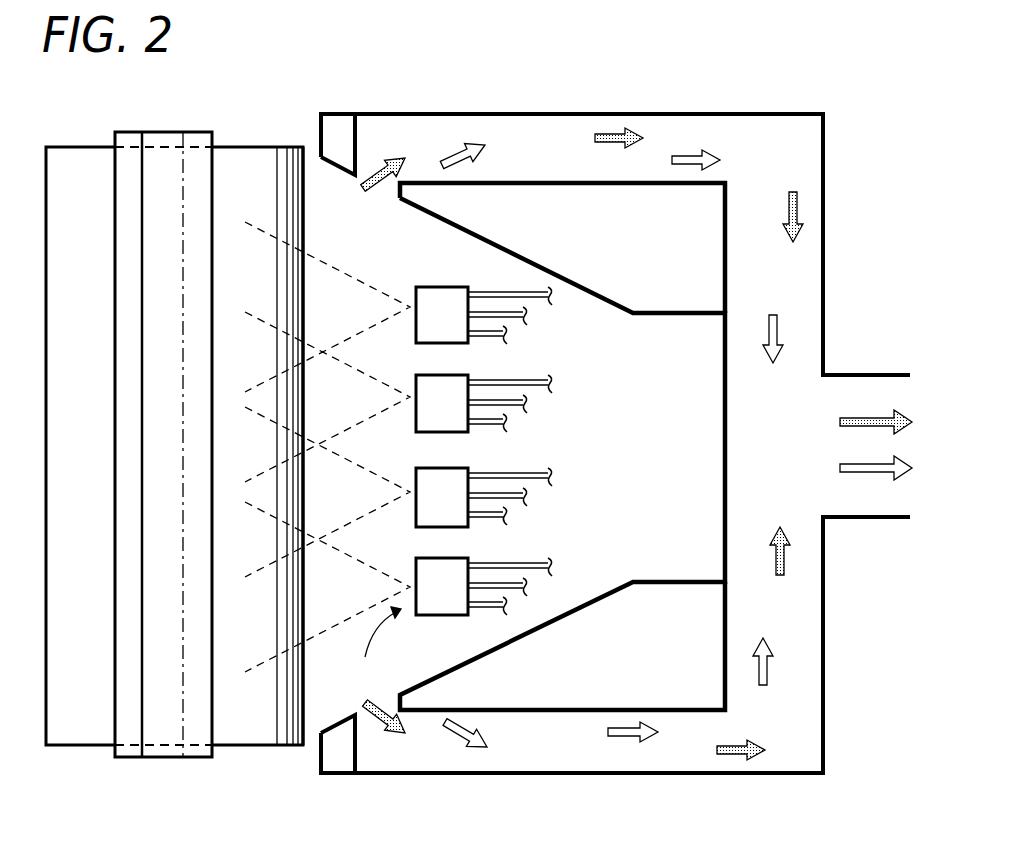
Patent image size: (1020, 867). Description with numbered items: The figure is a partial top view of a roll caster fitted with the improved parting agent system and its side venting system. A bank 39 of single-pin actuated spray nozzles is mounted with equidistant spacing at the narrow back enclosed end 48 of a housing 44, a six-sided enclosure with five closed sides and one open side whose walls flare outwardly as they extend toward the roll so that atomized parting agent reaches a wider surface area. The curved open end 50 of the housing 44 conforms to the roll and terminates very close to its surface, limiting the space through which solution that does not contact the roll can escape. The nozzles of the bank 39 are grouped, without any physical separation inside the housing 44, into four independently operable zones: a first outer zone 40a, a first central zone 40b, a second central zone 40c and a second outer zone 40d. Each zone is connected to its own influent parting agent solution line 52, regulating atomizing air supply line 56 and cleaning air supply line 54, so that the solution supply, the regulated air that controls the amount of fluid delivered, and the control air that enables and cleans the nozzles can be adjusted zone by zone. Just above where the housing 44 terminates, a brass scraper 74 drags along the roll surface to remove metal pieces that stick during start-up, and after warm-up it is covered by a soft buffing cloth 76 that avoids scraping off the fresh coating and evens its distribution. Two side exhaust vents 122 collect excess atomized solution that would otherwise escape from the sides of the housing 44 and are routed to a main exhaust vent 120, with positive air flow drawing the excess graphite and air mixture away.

The bank 39 is at (372, 650).
The first outer zone 40a is at (435, 558).
The first central zone 40b is at (435, 468).
The second central zone 40c is at (435, 375).
The second outer zone 40d is at (435, 287).
The housing 44 is at (669, 326).
The back enclosed end 48 is at (720, 432).
The open end 50 is at (325, 710).
The influent parting agent solution line 52 is at (518, 291).
The cleaning air supply line 54 is at (500, 330).
The regulating atomizing air supply line 56 is at (527, 311).
The brass scraper 74 is at (153, 158).
The soft buffing cloth 76 is at (200, 157).
The main exhaust vent 120 is at (825, 395).
The side exhaust vents 122 is at (712, 130).